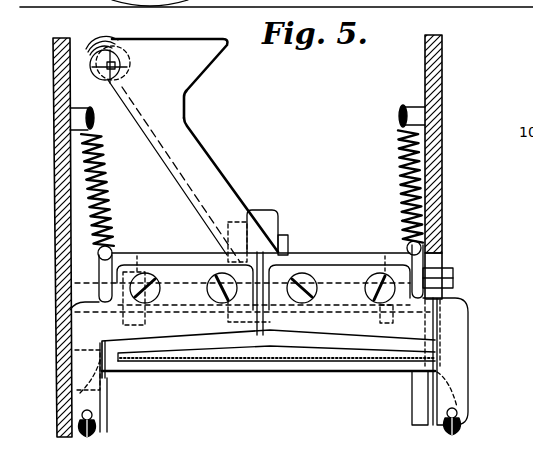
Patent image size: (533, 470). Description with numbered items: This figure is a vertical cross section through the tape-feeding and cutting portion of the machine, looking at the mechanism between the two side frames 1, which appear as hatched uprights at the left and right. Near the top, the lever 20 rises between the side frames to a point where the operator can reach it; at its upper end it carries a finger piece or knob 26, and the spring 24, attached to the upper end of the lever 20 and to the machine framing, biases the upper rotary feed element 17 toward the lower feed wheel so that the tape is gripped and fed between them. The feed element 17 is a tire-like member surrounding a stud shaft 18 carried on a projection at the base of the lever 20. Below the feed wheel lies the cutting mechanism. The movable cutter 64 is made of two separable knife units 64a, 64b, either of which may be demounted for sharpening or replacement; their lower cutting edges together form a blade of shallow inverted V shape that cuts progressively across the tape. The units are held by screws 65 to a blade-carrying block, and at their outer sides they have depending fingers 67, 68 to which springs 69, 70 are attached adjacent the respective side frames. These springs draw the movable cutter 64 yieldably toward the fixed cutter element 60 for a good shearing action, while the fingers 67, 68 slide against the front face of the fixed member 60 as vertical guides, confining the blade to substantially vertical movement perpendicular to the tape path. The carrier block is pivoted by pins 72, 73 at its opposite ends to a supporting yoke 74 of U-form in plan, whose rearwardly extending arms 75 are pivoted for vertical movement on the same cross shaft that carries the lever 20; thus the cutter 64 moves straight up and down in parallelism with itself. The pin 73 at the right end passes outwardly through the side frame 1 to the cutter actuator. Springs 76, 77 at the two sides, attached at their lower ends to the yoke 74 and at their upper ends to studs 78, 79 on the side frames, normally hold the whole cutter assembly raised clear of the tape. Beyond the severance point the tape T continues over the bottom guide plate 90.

The side frame 1 is at (56, 74).
The upper rotary feed element 17 is at (262, 211).
The stud shaft 18 is at (289, 245).
The lever 20 is at (212, 156).
The spring 24 is at (100, 48).
The finger piece or knob 26 is at (167, 47).
The fixed cutter element 60 is at (408, 366).
The movable cutter 64 is at (210, 326).
The knife unit 64a is at (178, 272).
The knife unit 64b is at (336, 270).
The screws 65 is at (161, 290).
The depending finger 67 is at (101, 400).
The depending finger 68 is at (460, 397).
The spring 69 is at (96, 433).
The spring 70 is at (445, 427).
The pivot pin 72 is at (97, 280).
The supporting pin 73 is at (453, 276).
The supporting yoke 74 is at (316, 258).
The rearwardly extending arms 75 is at (137, 256).
The spring 76 is at (106, 190).
The spring 77 is at (398, 166).
The stud 78 is at (78, 114).
The stud 79 is at (415, 108).
The bottom guide plate 90 is at (346, 364).
The tray edge T is at (304, 363).